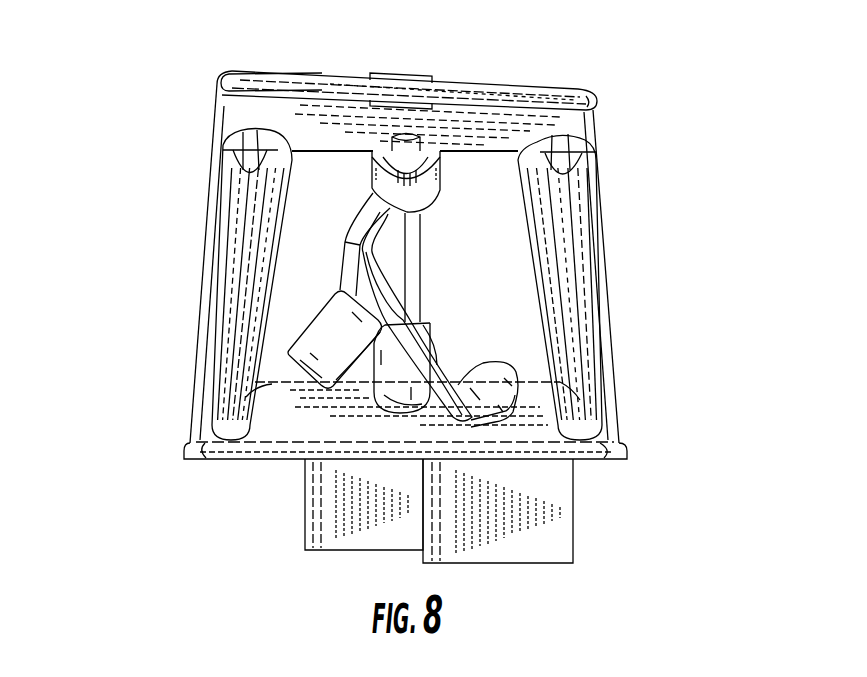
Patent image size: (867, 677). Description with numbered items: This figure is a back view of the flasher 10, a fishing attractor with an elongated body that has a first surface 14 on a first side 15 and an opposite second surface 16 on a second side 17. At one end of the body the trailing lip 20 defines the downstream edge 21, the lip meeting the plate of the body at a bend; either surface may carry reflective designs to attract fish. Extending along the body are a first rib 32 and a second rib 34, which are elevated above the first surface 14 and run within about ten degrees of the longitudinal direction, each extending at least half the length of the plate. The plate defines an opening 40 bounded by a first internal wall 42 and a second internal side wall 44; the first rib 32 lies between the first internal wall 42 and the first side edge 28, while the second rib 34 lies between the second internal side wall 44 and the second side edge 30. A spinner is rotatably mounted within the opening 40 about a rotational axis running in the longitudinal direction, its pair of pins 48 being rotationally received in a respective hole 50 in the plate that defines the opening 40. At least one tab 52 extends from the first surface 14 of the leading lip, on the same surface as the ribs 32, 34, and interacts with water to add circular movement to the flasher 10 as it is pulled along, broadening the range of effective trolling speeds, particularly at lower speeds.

The flasher 10 is at (142, 96).
The first surface 14 is at (545, 437).
The first side 15 is at (275, 463).
The second surface 16 is at (512, 80).
The second side 17 is at (558, 88).
The trailing lip 20 is at (435, 88).
The downstream edge 21 is at (328, 80).
The first side edge 28 is at (203, 272).
The second side edge 30 is at (607, 211).
The first rib 32 is at (227, 343).
The second rib 34 is at (577, 366).
The opening 40 is at (505, 297).
The first internal wall 42 is at (295, 247).
The second internal side wall 44 is at (520, 243).
The pins 48 is at (418, 162).
The hole 50 is at (393, 146).
The tab 52 is at (558, 542).